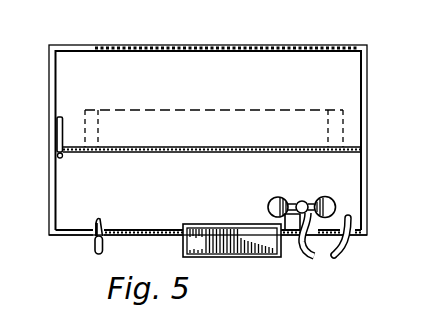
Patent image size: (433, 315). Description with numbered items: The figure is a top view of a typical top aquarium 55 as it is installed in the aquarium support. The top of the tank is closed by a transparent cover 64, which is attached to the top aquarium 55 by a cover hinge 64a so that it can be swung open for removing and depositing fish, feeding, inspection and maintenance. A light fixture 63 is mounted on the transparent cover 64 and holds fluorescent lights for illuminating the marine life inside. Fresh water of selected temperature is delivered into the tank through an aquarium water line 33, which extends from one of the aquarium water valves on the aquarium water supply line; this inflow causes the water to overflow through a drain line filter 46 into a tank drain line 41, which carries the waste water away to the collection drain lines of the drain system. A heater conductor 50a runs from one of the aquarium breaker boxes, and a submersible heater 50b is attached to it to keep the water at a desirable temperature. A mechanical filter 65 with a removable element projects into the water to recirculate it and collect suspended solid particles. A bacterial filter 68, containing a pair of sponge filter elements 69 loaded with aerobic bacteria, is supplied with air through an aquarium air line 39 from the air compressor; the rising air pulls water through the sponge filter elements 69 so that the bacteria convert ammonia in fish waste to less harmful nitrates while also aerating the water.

The top aquarium 55 is at (94, 42).
The transparent cover 64 is at (182, 93).
The light fixture 63 is at (225, 109).
The heater conductor 50a is at (57, 134).
The submersible heater 50b is at (60, 157).
The cover hinge 64a is at (89, 153).
The drain line filter 46 is at (98, 220).
The mechanical filter 65 is at (203, 225).
The tank drain line 41 is at (92, 247).
The bacterial filter 68 is at (262, 207).
The sponge filter elements 69 is at (327, 196).
The aquarium air line 39 is at (314, 258).
The aquarium water line 33 is at (353, 246).